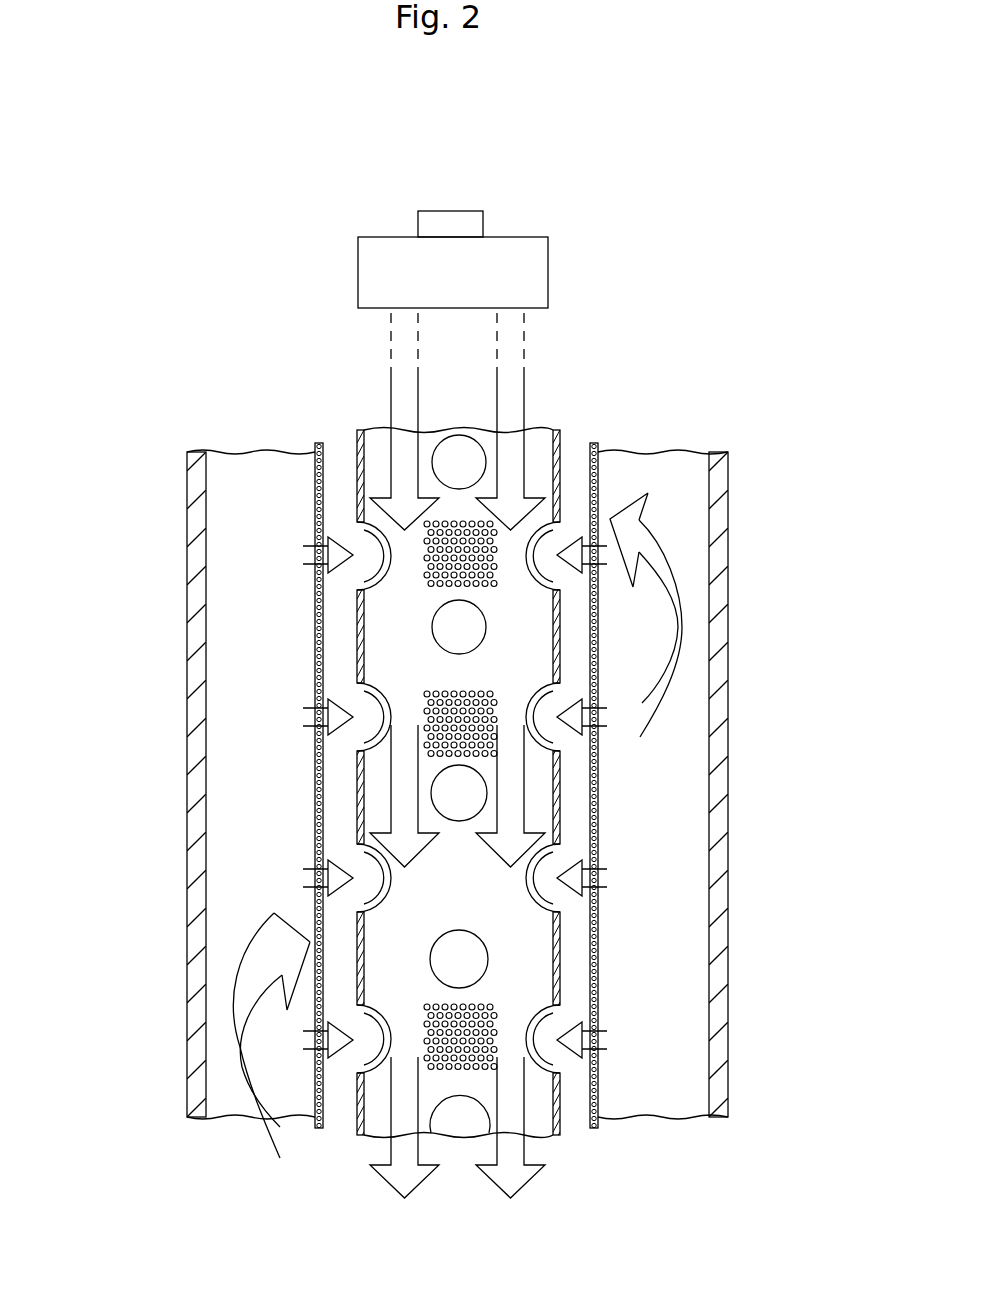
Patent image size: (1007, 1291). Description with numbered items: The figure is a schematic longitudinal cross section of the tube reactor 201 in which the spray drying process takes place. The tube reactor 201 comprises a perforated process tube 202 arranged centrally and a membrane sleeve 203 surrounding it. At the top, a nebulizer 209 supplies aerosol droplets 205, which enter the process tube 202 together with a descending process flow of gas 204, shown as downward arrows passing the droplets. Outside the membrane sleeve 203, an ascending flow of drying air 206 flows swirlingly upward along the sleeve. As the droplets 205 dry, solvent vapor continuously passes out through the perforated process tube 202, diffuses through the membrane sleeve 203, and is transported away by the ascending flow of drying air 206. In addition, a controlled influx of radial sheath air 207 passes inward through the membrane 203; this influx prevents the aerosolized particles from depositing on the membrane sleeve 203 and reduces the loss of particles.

The tube reactor 201 is at (729, 495).
The perforated process tube 202 is at (540, 440).
The membrane sleeve 203 is at (593, 443).
The descending process flow of gas 204 is at (513, 393).
The aerosol droplets 205 is at (447, 700).
The ascending flow of drying air 206 is at (670, 578).
The radial sheath air 207 is at (307, 719).
The nebulizer 209 is at (548, 240).